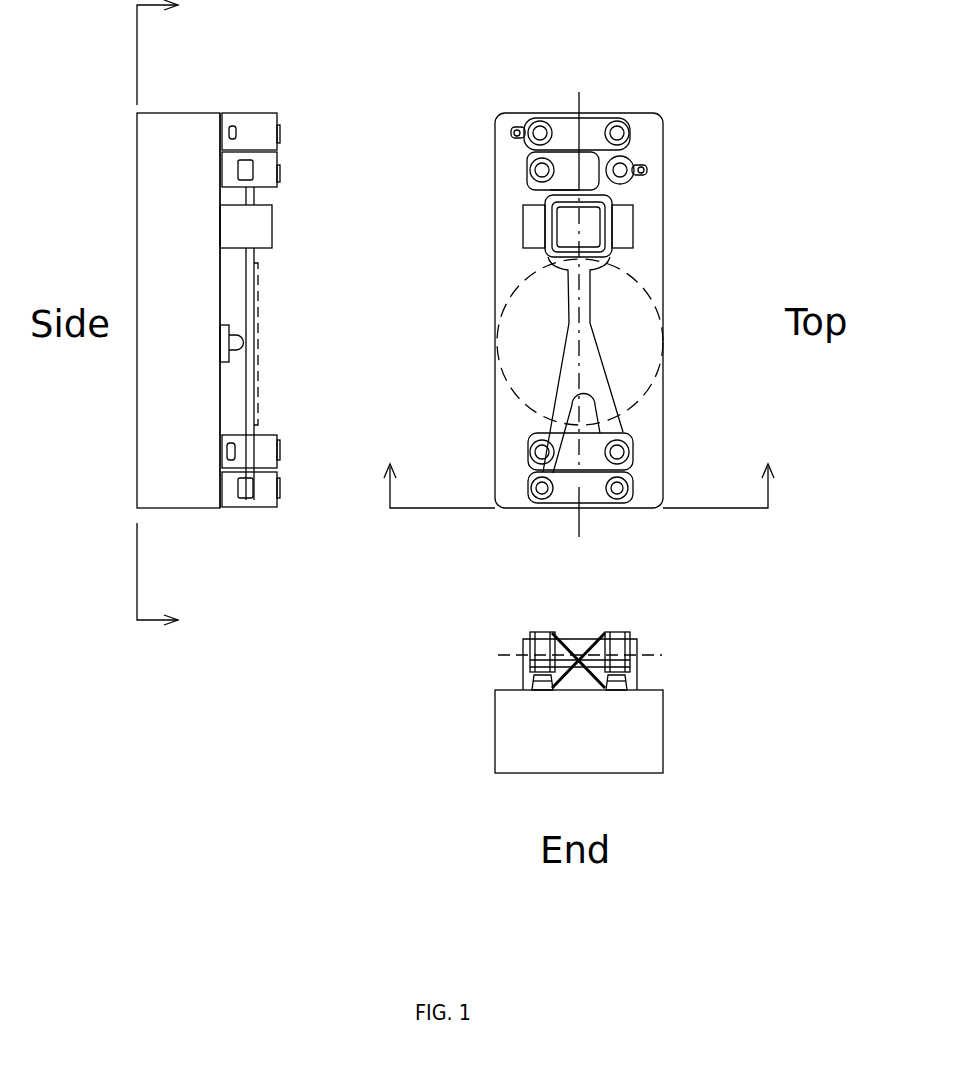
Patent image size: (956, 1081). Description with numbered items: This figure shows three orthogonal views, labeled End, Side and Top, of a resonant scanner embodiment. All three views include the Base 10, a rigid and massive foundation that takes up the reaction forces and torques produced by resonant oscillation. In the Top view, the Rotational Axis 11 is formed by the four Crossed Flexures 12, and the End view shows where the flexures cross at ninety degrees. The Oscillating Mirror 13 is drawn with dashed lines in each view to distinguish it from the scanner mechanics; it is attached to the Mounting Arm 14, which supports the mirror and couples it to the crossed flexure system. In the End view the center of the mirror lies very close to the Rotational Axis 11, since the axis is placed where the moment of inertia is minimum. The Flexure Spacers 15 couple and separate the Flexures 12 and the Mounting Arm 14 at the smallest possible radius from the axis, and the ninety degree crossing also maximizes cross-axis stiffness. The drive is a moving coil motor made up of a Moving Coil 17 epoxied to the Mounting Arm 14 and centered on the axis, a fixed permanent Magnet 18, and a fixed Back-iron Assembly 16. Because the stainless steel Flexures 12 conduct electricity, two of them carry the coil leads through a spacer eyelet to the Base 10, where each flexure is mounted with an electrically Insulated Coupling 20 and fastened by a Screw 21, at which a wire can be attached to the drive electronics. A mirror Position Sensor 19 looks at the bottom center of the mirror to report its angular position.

The Base 10 is at (172, 483).
The Rotational Axis 11 is at (581, 295).
The Crossed Flexures 12 is at (258, 127).
The Oscillating Mirror 13 is at (255, 292).
The Mounting Arm 14 is at (248, 375).
The Flexure Spacers 15 is at (267, 170).
The Back-iron Assembly 16 is at (257, 228).
The Moving Coil 17 is at (602, 248).
The Magnet 18 is at (588, 223).
The Position Sensor 19 is at (231, 343).
The Insulated Coupling 20 is at (221, 133).
The Screw 21 is at (231, 126).